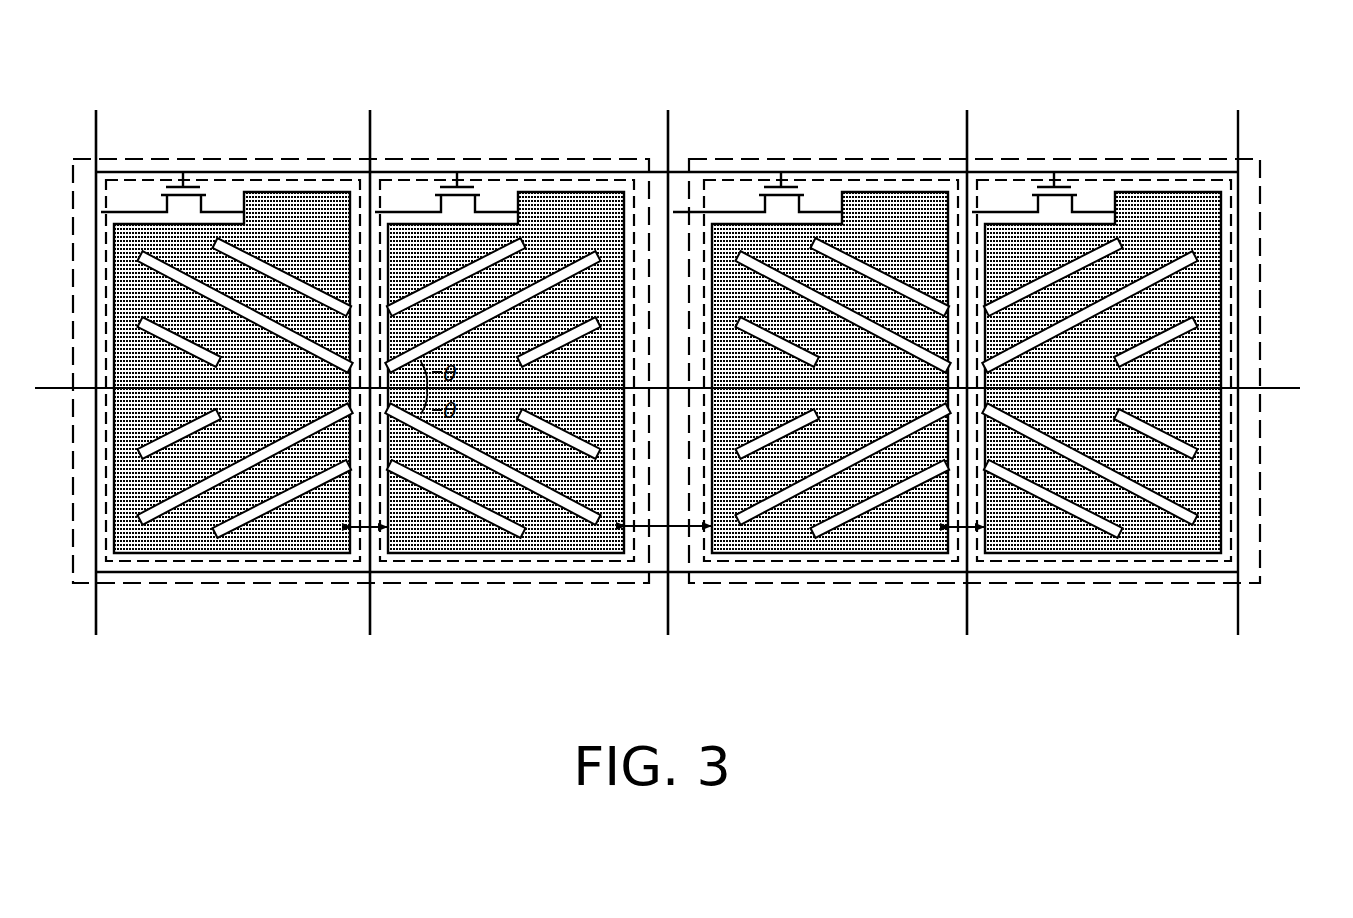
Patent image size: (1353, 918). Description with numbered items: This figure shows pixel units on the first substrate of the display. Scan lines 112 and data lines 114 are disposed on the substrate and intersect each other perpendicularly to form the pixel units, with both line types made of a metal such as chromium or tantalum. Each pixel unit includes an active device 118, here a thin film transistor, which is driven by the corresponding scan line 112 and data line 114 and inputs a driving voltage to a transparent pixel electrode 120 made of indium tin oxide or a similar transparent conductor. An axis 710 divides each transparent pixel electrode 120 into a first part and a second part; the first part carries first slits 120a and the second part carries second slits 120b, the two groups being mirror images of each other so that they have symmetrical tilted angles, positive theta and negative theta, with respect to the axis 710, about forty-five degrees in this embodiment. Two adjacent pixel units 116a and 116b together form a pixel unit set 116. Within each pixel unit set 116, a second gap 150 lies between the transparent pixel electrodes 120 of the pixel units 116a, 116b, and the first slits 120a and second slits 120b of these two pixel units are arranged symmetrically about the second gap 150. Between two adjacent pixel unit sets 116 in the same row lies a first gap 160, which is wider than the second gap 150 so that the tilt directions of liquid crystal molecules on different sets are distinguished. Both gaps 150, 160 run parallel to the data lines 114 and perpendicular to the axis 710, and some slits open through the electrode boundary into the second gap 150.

The scan line 112 is at (587, 172).
The data line 114 is at (96, 145).
The pixel unit set 116 is at (153, 585).
The pixel unit 116a is at (233, 561).
The pixel unit 116b is at (500, 561).
The active device 118 is at (178, 185).
The transparent pixel electrode 120 is at (320, 215).
The first slit 120a is at (274, 273).
The second slit 120b is at (292, 494).
The second gap 150 is at (372, 540).
The first gap 160 is at (680, 530).
The axis 710 is at (694, 391).